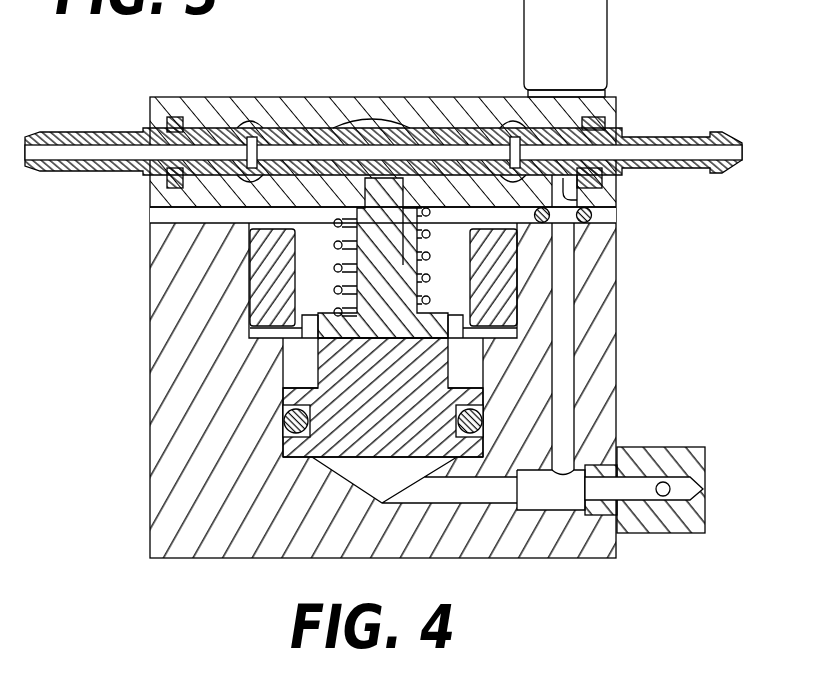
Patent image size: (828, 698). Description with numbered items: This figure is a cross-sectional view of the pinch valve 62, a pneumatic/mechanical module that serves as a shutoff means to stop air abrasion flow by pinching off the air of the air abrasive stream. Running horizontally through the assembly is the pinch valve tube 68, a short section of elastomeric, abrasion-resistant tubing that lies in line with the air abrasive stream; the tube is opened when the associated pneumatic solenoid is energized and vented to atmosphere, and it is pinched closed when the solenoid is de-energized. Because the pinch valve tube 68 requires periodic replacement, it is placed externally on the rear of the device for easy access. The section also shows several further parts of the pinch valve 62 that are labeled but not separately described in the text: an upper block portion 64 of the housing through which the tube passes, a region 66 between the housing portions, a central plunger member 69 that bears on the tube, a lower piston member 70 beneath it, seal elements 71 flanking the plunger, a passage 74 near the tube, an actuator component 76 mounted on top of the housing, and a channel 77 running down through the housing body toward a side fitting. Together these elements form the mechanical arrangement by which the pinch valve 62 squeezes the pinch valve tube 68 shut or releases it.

The pinch valve 62 is at (648, 333).
The upper block 64 is at (318, 97).
The gap between housing blocks 66 is at (212, 208).
The pinch valve tube 68 is at (413, 133).
The poppet plunger 69 is at (383, 253).
The piston 70 is at (355, 438).
The seal ring 71 is at (295, 293).
The passage 74 is at (578, 200).
The actuator 76 is at (607, 28).
The channel 77 is at (562, 298).